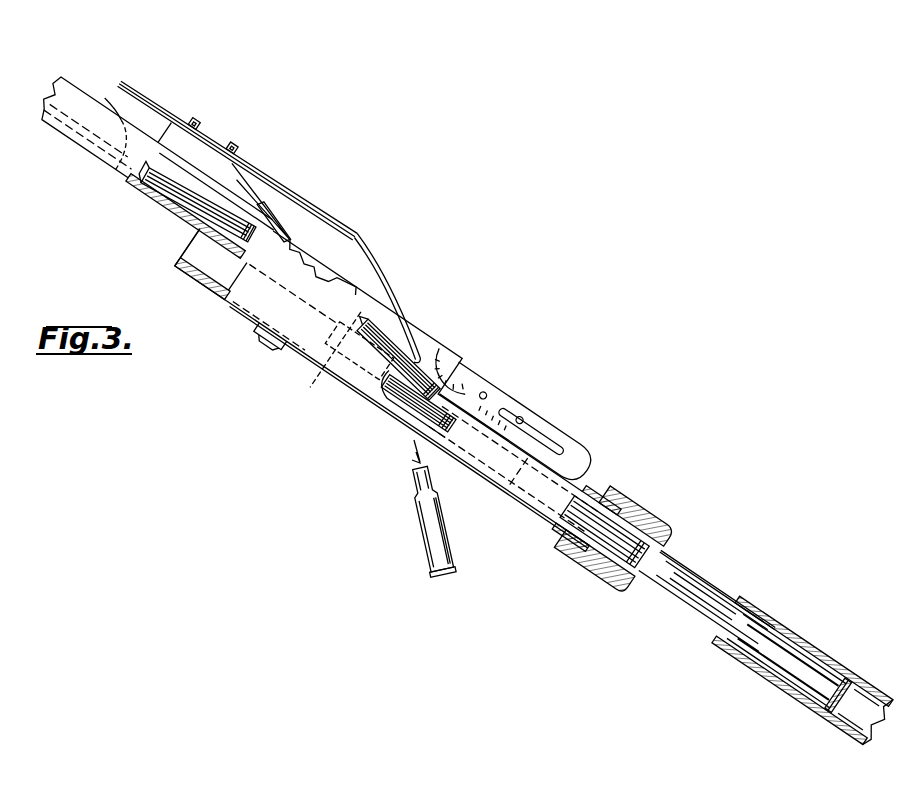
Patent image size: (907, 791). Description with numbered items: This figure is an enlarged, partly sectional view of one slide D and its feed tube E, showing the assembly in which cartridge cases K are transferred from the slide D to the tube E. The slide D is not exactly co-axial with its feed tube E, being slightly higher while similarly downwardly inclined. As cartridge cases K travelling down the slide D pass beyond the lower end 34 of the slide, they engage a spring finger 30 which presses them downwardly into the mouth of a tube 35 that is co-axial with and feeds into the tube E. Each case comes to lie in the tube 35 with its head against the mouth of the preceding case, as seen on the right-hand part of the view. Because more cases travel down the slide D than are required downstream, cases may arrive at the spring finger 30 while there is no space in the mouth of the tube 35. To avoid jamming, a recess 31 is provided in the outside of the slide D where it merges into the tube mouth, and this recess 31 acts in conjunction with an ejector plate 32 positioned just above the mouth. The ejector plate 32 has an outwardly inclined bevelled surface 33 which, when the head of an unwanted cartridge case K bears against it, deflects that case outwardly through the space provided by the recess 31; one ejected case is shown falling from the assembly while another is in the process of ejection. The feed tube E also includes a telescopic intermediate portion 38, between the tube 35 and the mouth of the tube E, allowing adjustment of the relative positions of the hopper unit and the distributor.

The slide D is at (136, 186).
The cartridge case K is at (180, 210).
The spring finger 30 is at (405, 297).
The recess 31 is at (405, 402).
The ejector plate 32 is at (478, 378).
The bevelled surface 33 is at (447, 362).
The lower end of slide 34 is at (350, 361).
The tube 35 is at (583, 483).
The telescopic intermediate portion 38 is at (690, 622).
The feed tube E is at (785, 622).